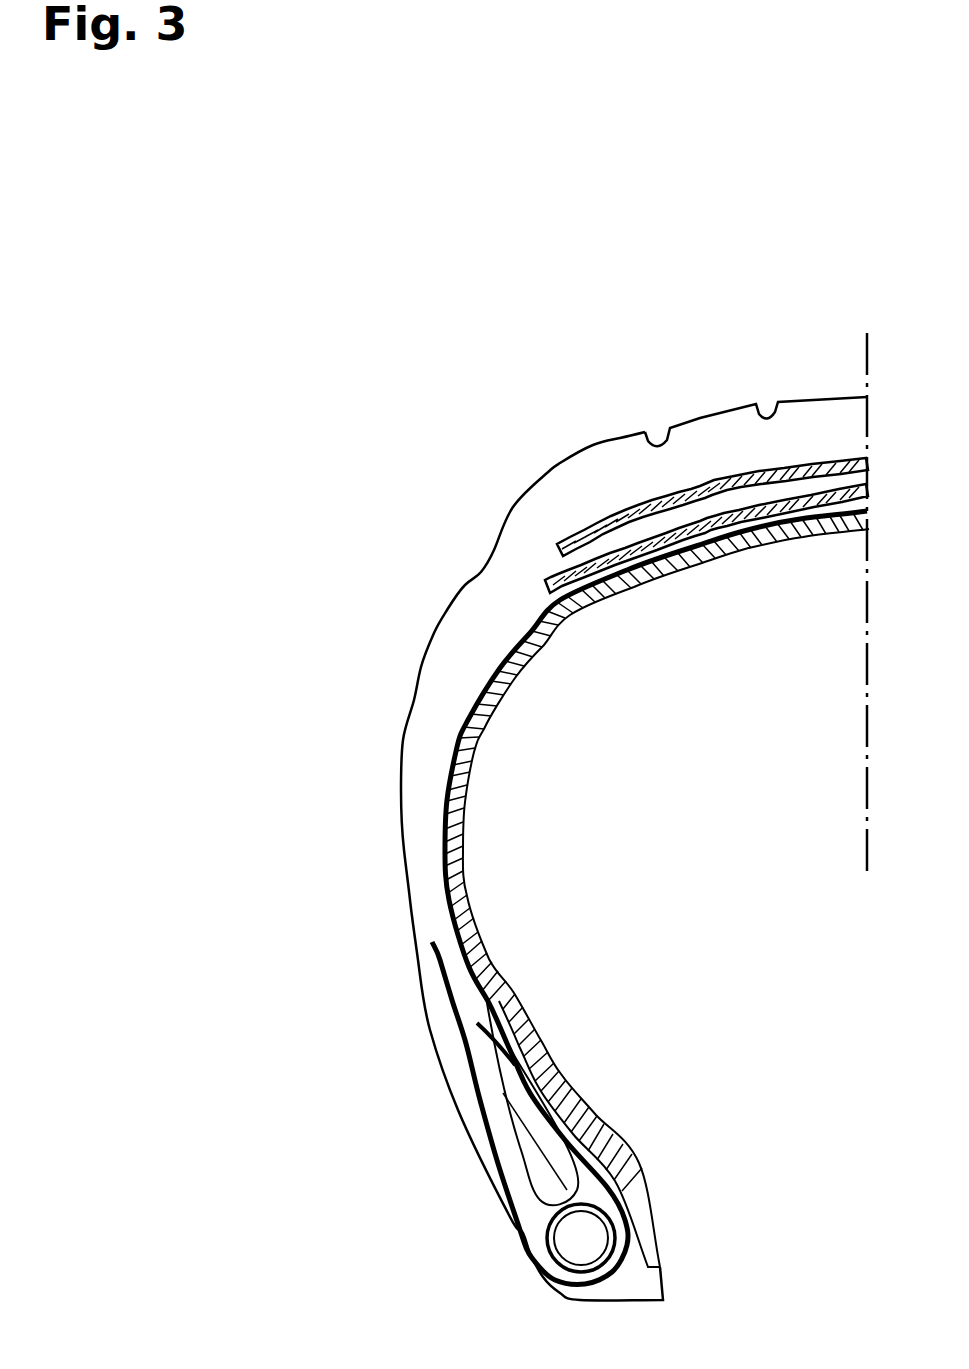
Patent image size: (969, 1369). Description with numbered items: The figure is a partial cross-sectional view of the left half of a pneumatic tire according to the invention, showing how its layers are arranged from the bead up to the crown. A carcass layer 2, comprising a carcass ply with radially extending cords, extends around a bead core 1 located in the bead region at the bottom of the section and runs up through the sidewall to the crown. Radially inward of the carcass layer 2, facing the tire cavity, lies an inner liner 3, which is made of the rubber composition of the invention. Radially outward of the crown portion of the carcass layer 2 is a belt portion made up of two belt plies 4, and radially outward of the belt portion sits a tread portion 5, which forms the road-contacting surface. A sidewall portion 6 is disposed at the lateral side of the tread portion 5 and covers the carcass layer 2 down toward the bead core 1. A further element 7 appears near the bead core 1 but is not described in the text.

The bead core 1 is at (588, 1225).
The carcass layer 2 is at (523, 632).
The inner liner 3 is at (461, 842).
The belt plies 4 is at (678, 497).
The tread portion 5 is at (713, 443).
The sidewall portion 6 is at (400, 795).
The bead filler 7 is at (525, 1157).